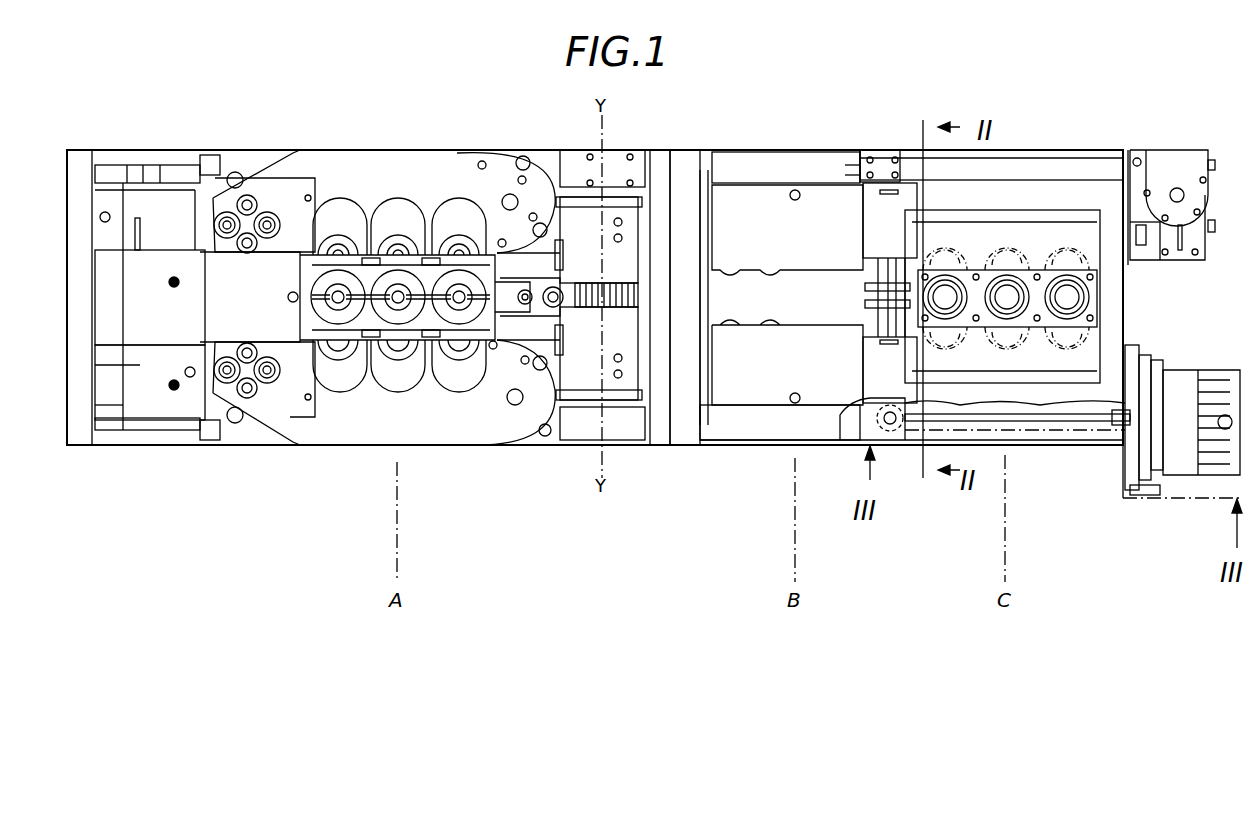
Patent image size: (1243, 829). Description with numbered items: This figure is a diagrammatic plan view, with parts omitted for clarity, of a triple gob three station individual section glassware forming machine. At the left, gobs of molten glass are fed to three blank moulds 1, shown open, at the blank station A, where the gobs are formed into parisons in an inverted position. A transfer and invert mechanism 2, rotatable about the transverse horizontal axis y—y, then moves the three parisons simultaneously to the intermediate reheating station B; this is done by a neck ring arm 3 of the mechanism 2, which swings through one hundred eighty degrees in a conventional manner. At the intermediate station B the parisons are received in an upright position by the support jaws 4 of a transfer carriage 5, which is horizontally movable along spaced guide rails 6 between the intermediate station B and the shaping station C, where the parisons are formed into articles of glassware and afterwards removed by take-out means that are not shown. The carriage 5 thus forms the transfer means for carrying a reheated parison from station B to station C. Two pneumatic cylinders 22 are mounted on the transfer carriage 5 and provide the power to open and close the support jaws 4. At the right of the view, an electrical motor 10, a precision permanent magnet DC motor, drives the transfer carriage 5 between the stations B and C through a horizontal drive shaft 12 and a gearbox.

The blank moulds 1 is at (445, 220).
The transfer and invert mechanism 2 is at (640, 262).
The neck ring arm 3 is at (403, 330).
The support jaws 4 is at (795, 252).
The transfer carriage 5 is at (793, 165).
The guide rails 6 is at (655, 445).
The electrical motor 10 is at (1180, 372).
The horizontal drive shaft 12 is at (1055, 422).
The pneumatic cylinders 22 is at (880, 207).